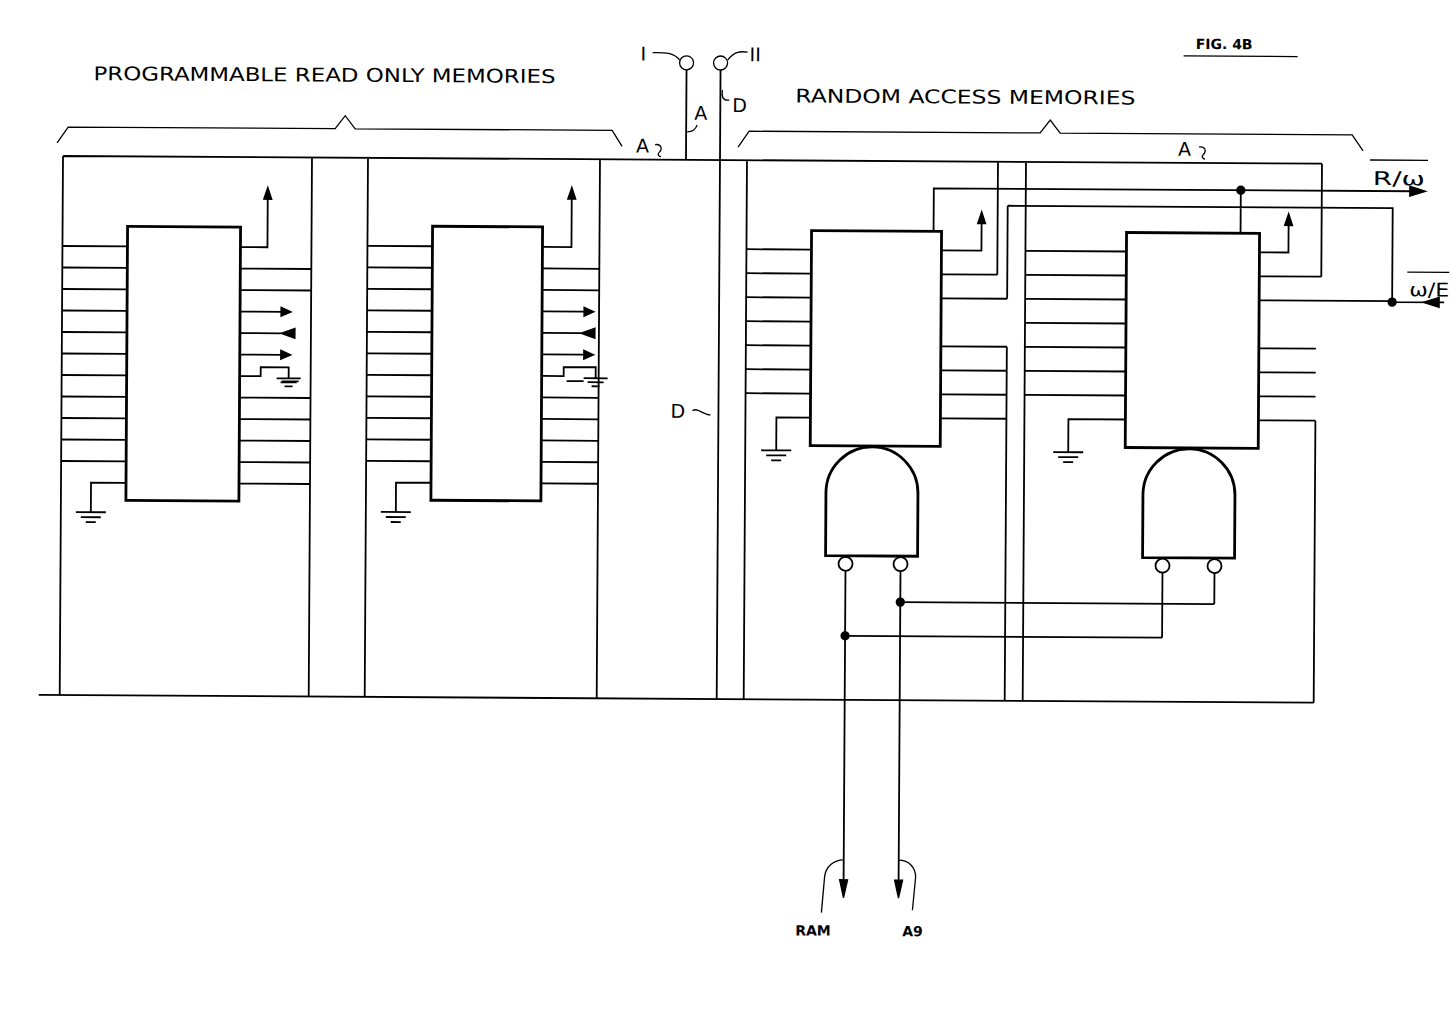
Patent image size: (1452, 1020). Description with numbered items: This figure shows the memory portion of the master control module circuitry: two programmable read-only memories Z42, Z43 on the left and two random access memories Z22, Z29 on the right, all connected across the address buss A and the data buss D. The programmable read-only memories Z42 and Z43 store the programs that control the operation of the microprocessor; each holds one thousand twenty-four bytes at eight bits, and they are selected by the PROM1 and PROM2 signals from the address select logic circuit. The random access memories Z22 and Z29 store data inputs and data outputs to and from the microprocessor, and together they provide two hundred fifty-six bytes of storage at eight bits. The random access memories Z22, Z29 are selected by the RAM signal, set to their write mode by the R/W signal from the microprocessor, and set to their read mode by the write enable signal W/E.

The programmable read-only memory Z42 is at (209, 346).
The programmable read-only memory Z43 is at (516, 346).
The random access memory Z22 is at (877, 401).
The random access memory Z29 is at (1208, 425).